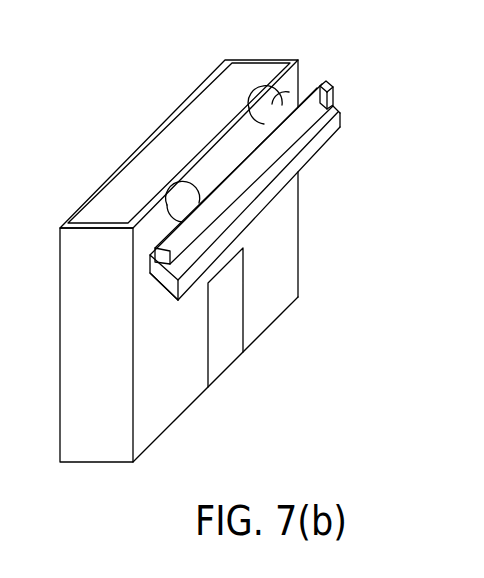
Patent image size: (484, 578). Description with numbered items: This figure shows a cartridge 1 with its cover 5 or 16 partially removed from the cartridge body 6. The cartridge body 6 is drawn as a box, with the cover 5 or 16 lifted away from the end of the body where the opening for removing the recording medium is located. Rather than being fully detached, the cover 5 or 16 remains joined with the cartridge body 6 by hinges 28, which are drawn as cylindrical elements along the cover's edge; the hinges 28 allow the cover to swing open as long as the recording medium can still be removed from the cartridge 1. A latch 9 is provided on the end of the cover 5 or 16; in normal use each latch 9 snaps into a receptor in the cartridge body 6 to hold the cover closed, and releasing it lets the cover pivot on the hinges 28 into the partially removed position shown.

The cartridge 1 is at (108, 118).
The cover 5 is at (338, 130).
The cover 16 is at (164, 286).
The cartridge body 6 is at (283, 247).
The latch 9 is at (327, 95).
The hinges 28 is at (168, 200).